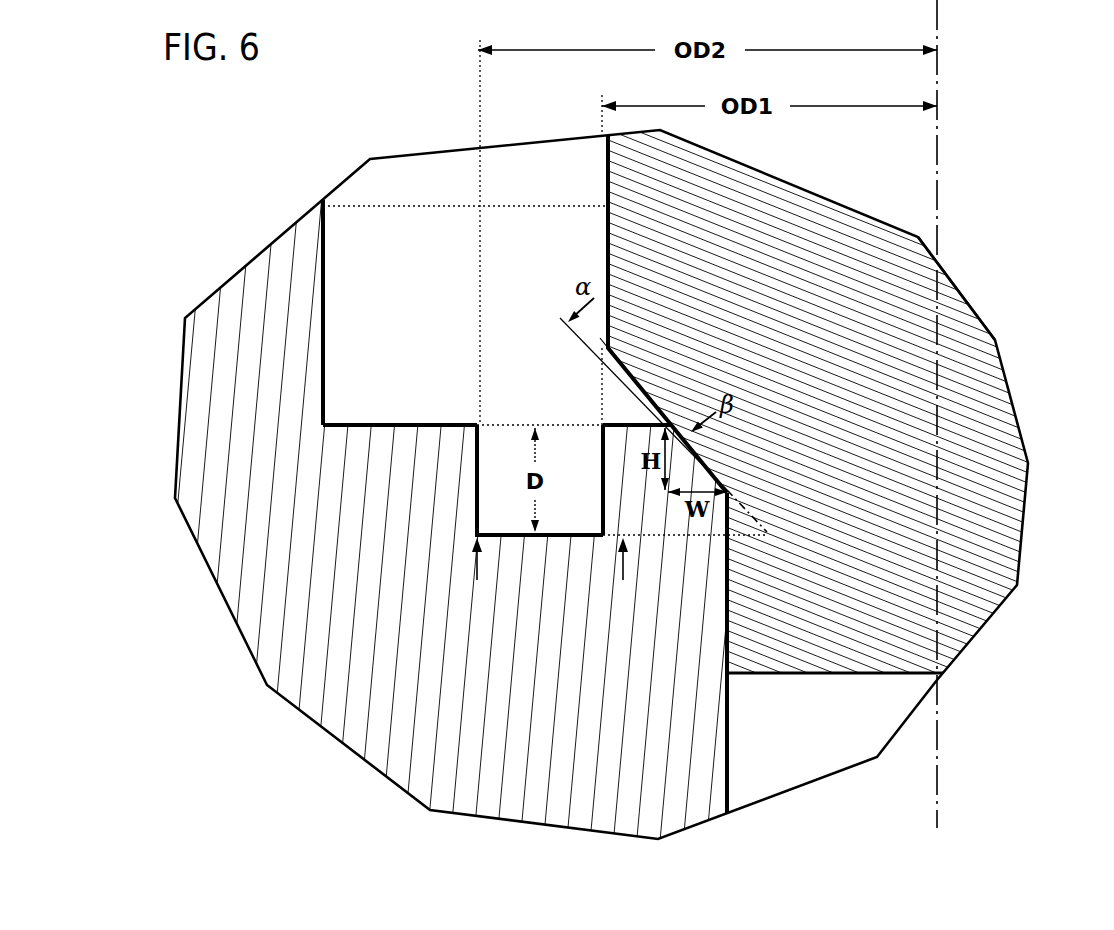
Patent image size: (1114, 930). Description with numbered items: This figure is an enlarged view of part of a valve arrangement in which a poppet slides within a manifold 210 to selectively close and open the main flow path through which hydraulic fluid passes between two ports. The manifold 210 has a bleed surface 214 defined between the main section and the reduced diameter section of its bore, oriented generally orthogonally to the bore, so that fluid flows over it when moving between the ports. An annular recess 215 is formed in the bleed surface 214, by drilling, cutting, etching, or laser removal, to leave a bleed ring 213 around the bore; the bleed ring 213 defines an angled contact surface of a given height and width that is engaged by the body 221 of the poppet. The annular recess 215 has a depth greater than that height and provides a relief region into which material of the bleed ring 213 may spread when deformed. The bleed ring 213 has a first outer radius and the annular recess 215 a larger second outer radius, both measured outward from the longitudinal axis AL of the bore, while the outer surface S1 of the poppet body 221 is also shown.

The manifold 210 is at (446, 500).
The bleed ring 213 is at (600, 480).
The bleed surface 214 is at (400, 365).
The annular recess 215 is at (513, 533).
The body 221 is at (827, 429).
The outer surface S1 is at (956, 277).
The longitudinal axis AL is at (936, 788).